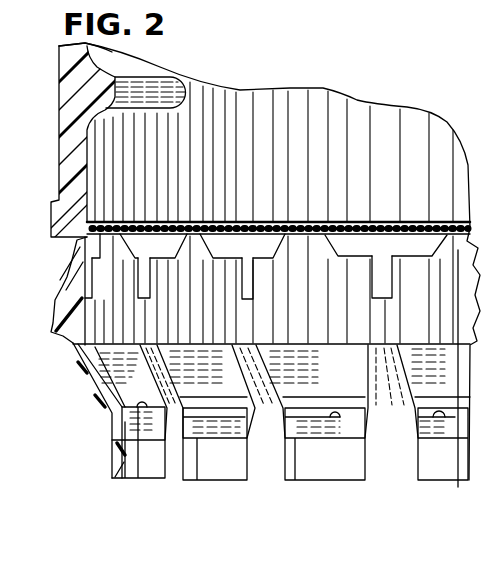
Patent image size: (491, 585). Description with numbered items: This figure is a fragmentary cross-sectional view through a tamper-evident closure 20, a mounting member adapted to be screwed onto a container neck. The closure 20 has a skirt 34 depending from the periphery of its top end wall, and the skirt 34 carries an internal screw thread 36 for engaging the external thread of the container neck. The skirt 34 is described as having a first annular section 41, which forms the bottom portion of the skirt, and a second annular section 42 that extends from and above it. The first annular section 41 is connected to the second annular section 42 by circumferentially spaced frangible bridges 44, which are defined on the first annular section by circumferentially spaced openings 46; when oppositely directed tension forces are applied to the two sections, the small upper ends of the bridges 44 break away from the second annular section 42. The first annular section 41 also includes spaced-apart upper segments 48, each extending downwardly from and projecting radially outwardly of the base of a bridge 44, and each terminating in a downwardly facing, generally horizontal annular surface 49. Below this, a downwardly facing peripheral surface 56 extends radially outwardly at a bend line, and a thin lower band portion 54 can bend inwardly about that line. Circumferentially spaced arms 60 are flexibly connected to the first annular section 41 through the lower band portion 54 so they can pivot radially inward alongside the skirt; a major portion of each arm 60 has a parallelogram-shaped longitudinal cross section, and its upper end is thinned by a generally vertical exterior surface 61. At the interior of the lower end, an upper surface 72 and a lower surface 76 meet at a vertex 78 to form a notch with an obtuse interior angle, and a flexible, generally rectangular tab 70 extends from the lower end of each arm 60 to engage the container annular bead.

The closure 20 is at (349, 78).
The skirt 34 is at (70, 57).
The internal screw thread 36 is at (163, 100).
The first annular section 41 is at (43, 240).
The second annular section 42 is at (44, 27).
The frangible bridges 44 is at (315, 245).
The openings 46 is at (171, 246).
The upper segments 48 is at (70, 323).
The annular surface 49 is at (70, 348).
The lower band portion 54 is at (388, 400).
The peripheral surface 56 is at (78, 382).
The arms 60 is at (135, 413).
The exterior surface 61 is at (87, 400).
The tab 70 is at (230, 467).
The upper surface 72 is at (243, 346).
The lower surface 76 is at (143, 480).
The vertex 78 is at (137, 410).